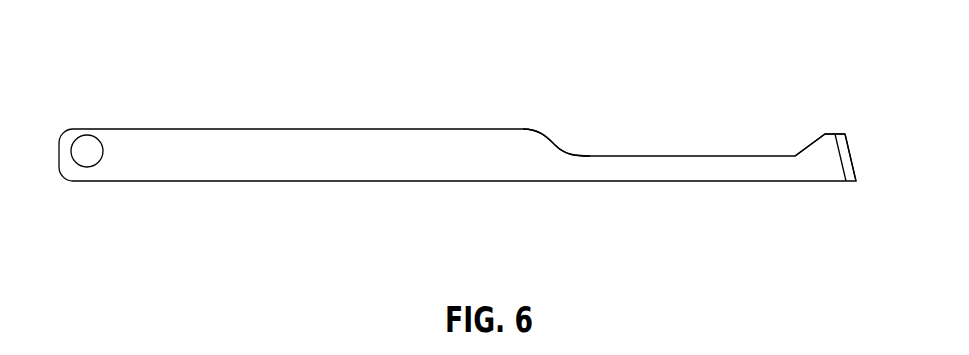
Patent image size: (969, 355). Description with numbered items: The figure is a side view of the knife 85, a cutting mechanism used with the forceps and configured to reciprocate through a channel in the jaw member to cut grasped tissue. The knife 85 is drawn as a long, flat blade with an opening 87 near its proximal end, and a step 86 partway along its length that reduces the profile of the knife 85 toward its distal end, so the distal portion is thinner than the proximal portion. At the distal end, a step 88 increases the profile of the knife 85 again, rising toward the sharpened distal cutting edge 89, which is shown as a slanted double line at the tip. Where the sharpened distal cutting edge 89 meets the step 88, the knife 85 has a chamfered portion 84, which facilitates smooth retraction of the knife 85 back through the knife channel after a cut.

The knife 85 is at (423, 72).
The mounting hole 87 is at (83, 148).
The step 86 is at (550, 143).
The step 88 is at (812, 143).
The chamfered portion 84 is at (827, 133).
The sharpened distal cutting edge 89 is at (853, 157).